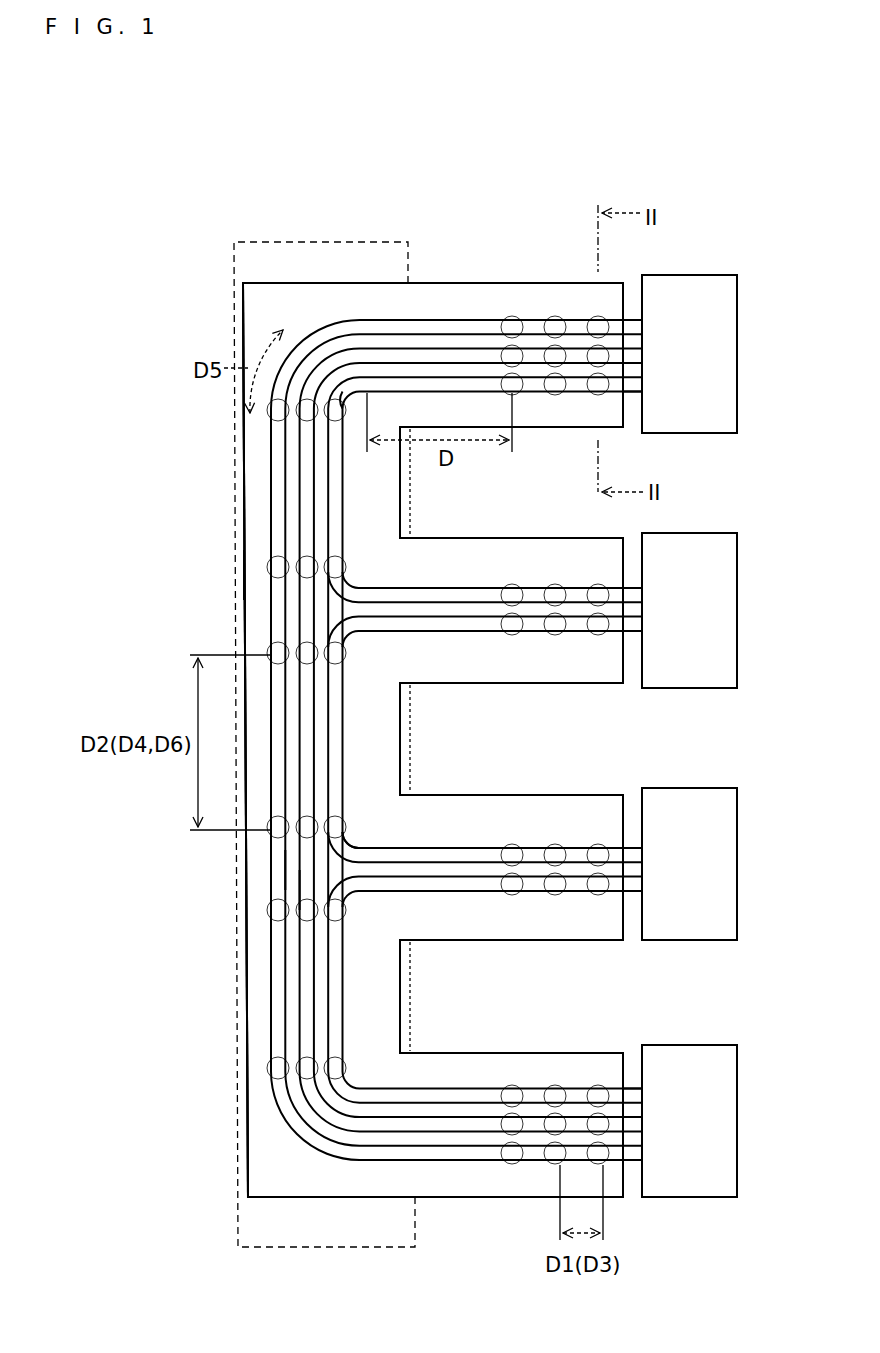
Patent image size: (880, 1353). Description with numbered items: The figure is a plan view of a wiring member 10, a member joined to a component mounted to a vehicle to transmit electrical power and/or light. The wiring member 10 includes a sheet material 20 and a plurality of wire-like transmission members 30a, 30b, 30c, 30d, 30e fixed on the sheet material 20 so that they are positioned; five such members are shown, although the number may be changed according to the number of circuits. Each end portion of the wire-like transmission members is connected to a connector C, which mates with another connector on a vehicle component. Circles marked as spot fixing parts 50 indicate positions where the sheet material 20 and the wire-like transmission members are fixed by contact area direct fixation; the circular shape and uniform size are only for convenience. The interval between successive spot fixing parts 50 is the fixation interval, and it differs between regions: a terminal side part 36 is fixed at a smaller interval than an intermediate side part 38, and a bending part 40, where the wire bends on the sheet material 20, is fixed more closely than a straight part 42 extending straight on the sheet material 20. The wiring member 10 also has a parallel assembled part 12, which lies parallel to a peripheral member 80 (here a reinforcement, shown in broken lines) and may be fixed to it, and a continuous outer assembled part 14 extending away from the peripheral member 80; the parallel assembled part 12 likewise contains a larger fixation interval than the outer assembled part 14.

The wiring member 10 is at (210, 152).
The parallel assembled part 12 is at (241, 481).
The outer assembled part 14 is at (456, 280).
The sheet material 20 is at (258, 576).
The wire-like transmission member 30a is at (292, 870).
The wire-like transmission member 30b is at (302, 895).
The wire-like transmission member 30c is at (440, 590).
The wire-like transmission member 30d is at (460, 634).
The wire-like transmission member 30e is at (475, 893).
The terminal side part 36 is at (627, 318).
The intermediate side part 38 is at (281, 523).
The bending part 40 is at (345, 330).
The straight part 42 is at (278, 990).
The spot fixing part 50 is at (300, 338).
The peripheral member 80 is at (305, 1250).
The connector C is at (737, 358).